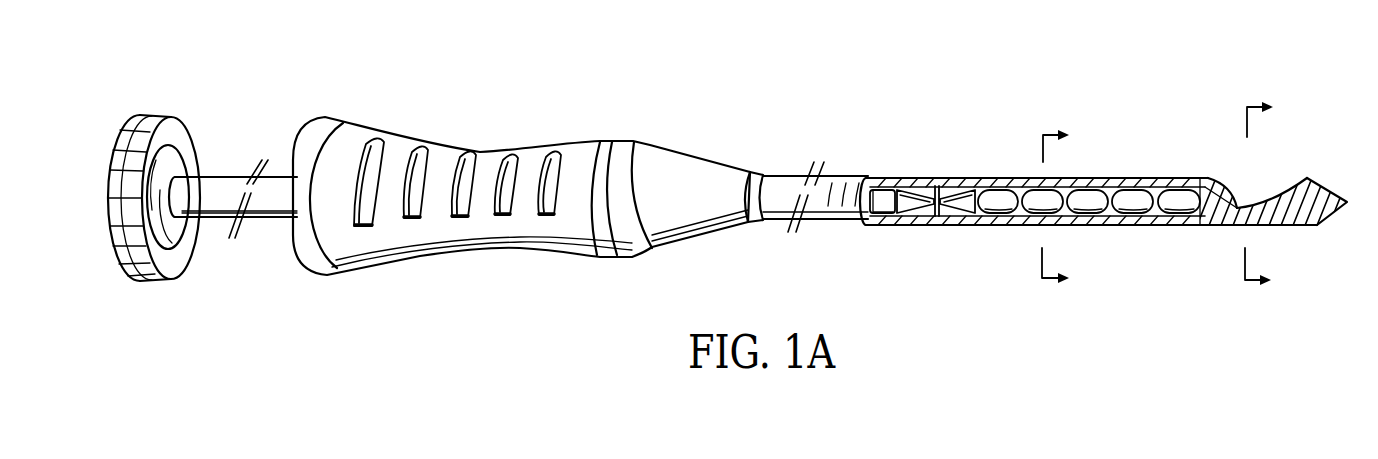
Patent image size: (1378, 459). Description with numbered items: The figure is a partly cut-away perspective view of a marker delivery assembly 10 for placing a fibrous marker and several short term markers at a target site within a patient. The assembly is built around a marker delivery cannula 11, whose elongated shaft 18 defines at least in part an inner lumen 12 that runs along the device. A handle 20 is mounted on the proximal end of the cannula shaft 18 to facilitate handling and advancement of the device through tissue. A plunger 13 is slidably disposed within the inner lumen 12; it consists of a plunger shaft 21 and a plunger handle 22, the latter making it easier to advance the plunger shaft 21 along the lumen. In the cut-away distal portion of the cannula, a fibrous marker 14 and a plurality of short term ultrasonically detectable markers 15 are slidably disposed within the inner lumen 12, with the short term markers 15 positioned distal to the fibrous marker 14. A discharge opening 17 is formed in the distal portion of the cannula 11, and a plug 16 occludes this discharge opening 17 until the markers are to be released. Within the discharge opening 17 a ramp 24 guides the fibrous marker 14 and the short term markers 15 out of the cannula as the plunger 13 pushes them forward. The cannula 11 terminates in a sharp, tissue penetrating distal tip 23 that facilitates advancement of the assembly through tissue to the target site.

The marker delivery assembly 10 is at (656, 90).
The marker delivery cannula 11 is at (788, 176).
The inner lumen 12 is at (1020, 226).
The plunger 13 is at (208, 218).
The fibrous marker 14 is at (930, 196).
The short term ultrasonically detectable markers 15 is at (1177, 201).
The plug 16 is at (1222, 214).
The discharge opening 17 is at (1229, 170).
The elongated shaft 18 is at (1146, 177).
The handle 20 is at (483, 250).
The plunger shaft 21 is at (223, 189).
The plunger handle 22 is at (180, 117).
The distal tip 23 is at (1308, 198).
The ramp 24 is at (1278, 203).